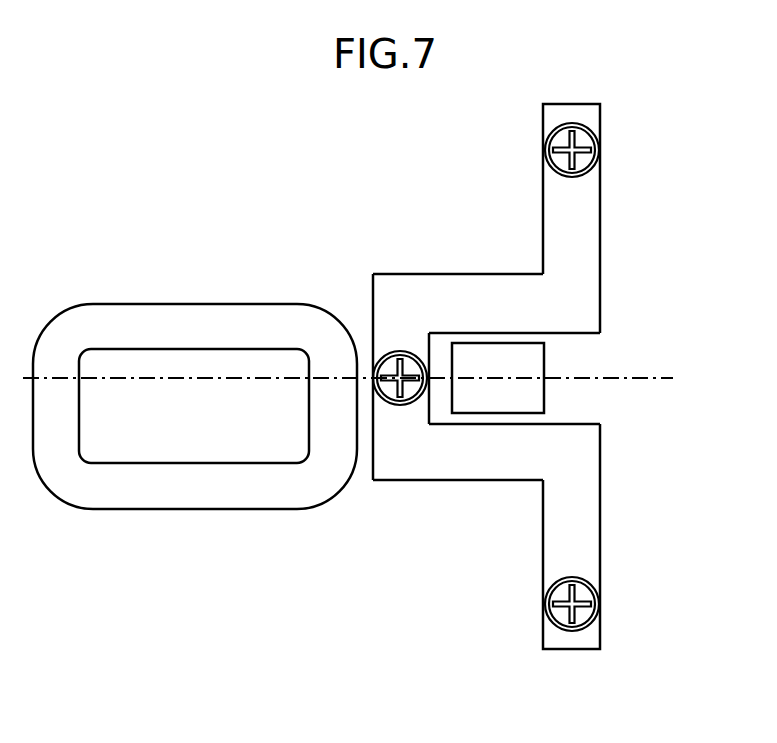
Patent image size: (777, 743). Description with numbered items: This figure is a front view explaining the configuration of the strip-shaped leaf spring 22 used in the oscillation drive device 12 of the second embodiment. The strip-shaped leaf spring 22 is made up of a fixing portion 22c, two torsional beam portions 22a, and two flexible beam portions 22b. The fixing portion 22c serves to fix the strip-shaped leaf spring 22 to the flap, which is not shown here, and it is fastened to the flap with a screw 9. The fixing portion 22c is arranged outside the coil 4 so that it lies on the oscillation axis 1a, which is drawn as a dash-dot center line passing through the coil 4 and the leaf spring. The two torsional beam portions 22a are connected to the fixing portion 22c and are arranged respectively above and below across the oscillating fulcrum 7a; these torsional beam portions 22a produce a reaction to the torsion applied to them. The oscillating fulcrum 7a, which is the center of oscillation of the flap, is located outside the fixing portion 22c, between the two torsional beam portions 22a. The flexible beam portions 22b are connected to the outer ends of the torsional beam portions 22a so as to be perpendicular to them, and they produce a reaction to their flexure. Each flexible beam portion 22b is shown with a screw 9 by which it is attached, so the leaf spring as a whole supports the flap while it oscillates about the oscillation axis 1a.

The oscillation drive device 12 is at (172, 196).
The coil 4 is at (275, 323).
The screw 9 is at (585, 145).
The strip-shaped leaf spring 22 is at (582, 300).
The torsional beam portion 22a is at (482, 305).
The flexible beam portion 22b is at (580, 213).
The fixing portion 22c is at (405, 422).
The oscillating fulcrum 7a is at (525, 367).
The oscillation axis 1a is at (618, 380).